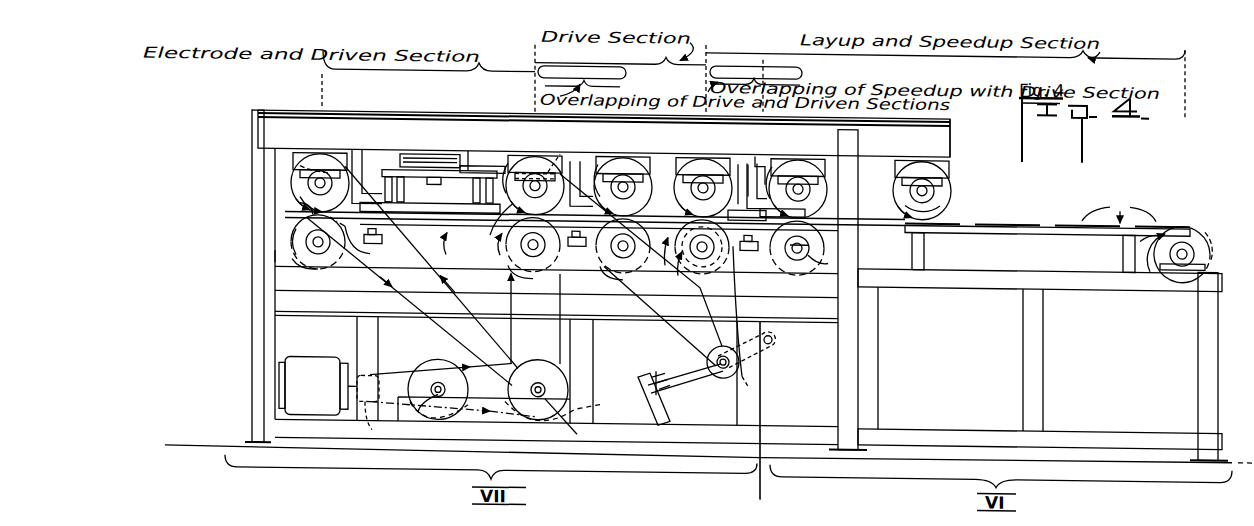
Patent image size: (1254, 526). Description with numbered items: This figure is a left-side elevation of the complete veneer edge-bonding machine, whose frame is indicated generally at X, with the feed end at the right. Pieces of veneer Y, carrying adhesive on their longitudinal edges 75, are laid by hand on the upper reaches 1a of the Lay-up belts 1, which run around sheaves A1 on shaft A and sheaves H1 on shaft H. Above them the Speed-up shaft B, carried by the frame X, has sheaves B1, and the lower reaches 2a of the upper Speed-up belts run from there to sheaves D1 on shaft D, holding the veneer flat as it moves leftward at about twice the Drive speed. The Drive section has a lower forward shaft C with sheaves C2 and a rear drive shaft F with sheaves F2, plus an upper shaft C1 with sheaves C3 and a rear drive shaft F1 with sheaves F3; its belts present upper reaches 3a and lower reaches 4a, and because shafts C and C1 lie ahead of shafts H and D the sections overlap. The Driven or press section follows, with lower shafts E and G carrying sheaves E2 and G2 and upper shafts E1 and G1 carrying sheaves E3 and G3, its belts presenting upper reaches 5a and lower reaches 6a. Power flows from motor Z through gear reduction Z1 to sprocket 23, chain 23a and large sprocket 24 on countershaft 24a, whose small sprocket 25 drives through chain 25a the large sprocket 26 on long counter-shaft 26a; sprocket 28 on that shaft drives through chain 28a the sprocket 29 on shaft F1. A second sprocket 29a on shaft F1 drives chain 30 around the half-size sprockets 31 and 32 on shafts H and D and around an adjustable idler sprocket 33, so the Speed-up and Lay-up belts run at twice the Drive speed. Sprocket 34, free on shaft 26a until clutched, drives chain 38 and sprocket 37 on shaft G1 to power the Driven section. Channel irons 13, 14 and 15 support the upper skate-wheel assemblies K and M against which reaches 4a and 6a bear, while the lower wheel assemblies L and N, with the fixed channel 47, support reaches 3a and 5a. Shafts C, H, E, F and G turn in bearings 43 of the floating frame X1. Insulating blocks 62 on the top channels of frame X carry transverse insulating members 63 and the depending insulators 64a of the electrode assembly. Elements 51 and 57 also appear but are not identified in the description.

The endless belts 1 is at (1205, 232).
The upper reaches 1a is at (1152, 228).
The lower reaches 2a is at (905, 214).
The upper reaches 3a is at (756, 238).
The lower reaches 4a is at (770, 207).
The upper reaches 5a is at (363, 241).
The lower reaches 6a is at (300, 206).
The channel iron 13 is at (760, 200).
The channel iron 14 is at (581, 183).
The channel iron 15 is at (366, 158).
The sprocket 23 is at (380, 420).
The endless chain 23a is at (420, 366).
The large sprocket 24 is at (452, 410).
The short countershaft 24a is at (418, 410).
The small sprocket 25 is at (446, 389).
The endless sprocket chain 25a is at (503, 410).
The large sprocket 26 is at (556, 372).
The long counter-shaft 26a is at (568, 405).
The sprocket 28 is at (570, 421).
The chain 28a is at (528, 318).
The sprocket 29 is at (513, 200).
The second sprocket 29a is at (552, 166).
The endless chain 30 is at (652, 326).
The small sprocket 31 is at (660, 223).
The small sprocket 32 is at (747, 215).
The adjustable idler sprocket 33 is at (712, 350).
The sprocket 34 is at (645, 415).
The sprocket 37 is at (300, 165).
The endless chain 38 is at (498, 326).
The bearings 43 is at (294, 258).
The transversely extending channel 47 is at (737, 270).
The belt 51 is at (562, 272).
The bearing block 57 is at (376, 234).
The insulating blocks 62 is at (440, 158).
The transversely extending insulating members 63 is at (478, 176).
The depending insulators 64a is at (436, 184).
The longitudinal edges 75 is at (1008, 216).
The shaft A is at (1188, 243).
The sheaves A1 is at (1158, 254).
The forward shaft B is at (930, 183).
The sheaves B1 is at (945, 193).
The shaft C is at (795, 250).
The shaft C1 is at (799, 176).
The sheaves C2 is at (810, 240).
The sheaves C3 is at (774, 188).
The shaft D is at (703, 176).
The sheaves D1 is at (742, 176).
The shaft E is at (628, 250).
The shaft E1 is at (624, 176).
The sheaves E2 is at (576, 246).
The sheaves E3 is at (636, 182).
The rear drive shaft F is at (533, 250).
The rear drive shaft F1 is at (536, 176).
The sheaves F2 is at (488, 249).
The sheaves F3 is at (513, 172).
The shaft G is at (318, 242).
The shaft G1 is at (320, 176).
The sheaves G2 is at (297, 237).
The sheaves G3 is at (297, 186).
The shaft H is at (700, 252).
The sheaves H1 is at (669, 272).
The skate wheel assembly K is at (752, 185).
The wheel assemblies L is at (660, 252).
The upper wheel assemblies M is at (430, 191).
The wheel assemblies N is at (450, 250).
The frame X is at (942, 130).
The floating frame X1 is at (284, 253).
The pieces of veneer Y is at (1119, 208).
The motor Z is at (308, 386).
The gear reduction mechanism Z1 is at (363, 370).